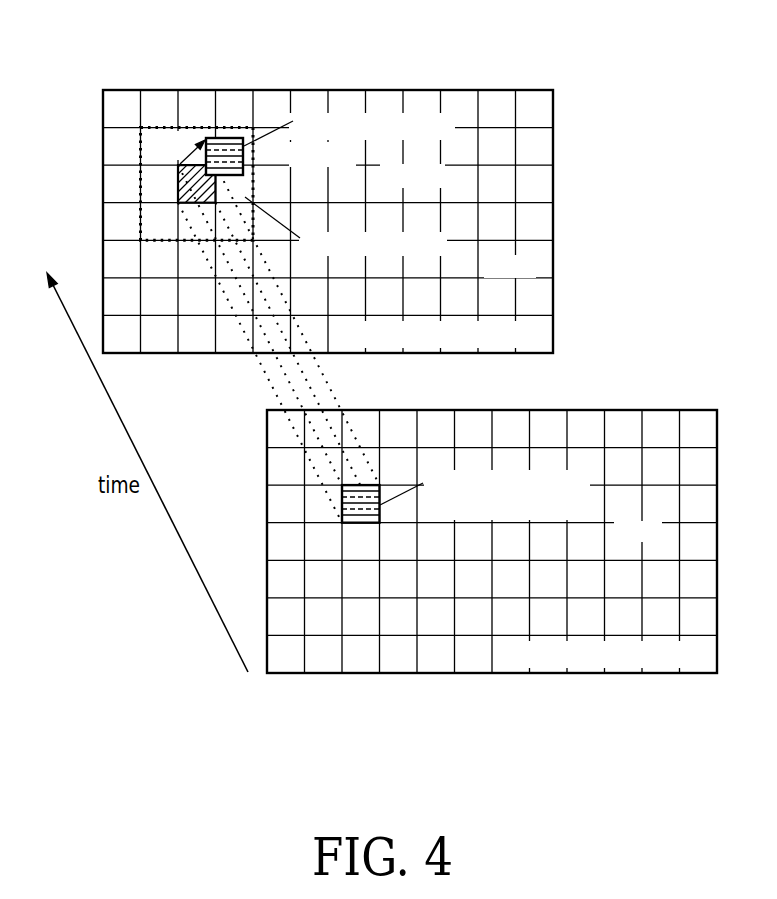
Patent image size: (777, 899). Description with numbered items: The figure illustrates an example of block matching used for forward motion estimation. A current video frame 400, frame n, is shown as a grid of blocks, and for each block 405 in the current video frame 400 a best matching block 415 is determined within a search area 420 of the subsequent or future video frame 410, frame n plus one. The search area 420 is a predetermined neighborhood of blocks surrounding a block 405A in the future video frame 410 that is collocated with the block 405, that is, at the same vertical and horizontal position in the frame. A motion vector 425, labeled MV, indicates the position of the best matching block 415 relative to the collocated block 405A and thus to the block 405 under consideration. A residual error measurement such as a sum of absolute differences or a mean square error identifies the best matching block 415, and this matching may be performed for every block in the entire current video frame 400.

The current video frame 400 is at (648, 410).
The block 405 is at (587, 512).
The collocated block 405A is at (180, 187).
The future video frame 410 is at (485, 90).
The best matching block 415 is at (358, 157).
The search area 420 is at (458, 243).
The motion vector 425 is at (190, 137).